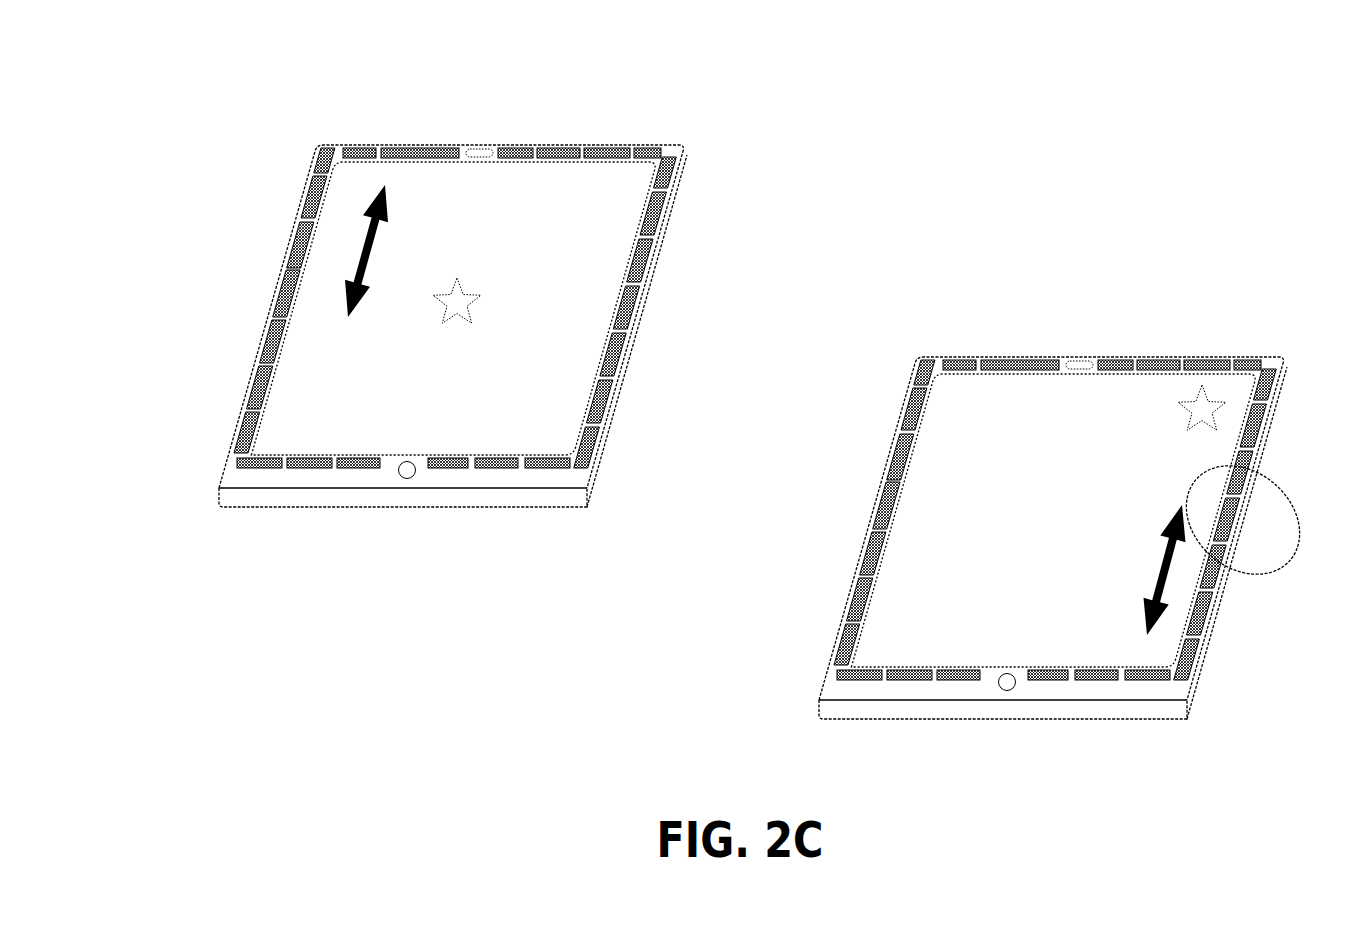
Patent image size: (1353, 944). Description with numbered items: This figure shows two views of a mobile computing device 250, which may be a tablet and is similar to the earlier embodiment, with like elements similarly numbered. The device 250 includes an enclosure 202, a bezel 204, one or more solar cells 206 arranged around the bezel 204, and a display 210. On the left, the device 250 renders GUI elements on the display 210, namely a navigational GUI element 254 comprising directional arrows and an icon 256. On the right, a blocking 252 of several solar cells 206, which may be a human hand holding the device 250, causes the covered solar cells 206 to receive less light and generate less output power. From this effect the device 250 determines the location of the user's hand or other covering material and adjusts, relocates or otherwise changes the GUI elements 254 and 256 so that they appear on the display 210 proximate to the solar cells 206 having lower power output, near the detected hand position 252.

The enclosure 202 is at (541, 143).
The bezel 204 is at (233, 483).
The solar cells 206 is at (270, 296).
The display 210 is at (310, 328).
The mobile computing device 250 is at (820, 54).
The blocking of solar cells 252 is at (1290, 500).
The navigational GUI element 254 is at (363, 193).
The icon 256 is at (425, 314).